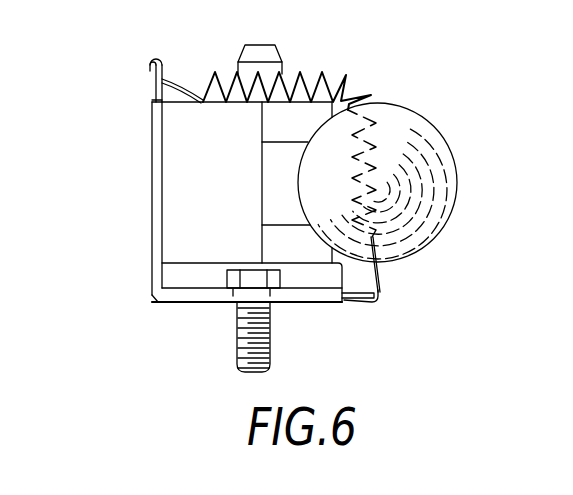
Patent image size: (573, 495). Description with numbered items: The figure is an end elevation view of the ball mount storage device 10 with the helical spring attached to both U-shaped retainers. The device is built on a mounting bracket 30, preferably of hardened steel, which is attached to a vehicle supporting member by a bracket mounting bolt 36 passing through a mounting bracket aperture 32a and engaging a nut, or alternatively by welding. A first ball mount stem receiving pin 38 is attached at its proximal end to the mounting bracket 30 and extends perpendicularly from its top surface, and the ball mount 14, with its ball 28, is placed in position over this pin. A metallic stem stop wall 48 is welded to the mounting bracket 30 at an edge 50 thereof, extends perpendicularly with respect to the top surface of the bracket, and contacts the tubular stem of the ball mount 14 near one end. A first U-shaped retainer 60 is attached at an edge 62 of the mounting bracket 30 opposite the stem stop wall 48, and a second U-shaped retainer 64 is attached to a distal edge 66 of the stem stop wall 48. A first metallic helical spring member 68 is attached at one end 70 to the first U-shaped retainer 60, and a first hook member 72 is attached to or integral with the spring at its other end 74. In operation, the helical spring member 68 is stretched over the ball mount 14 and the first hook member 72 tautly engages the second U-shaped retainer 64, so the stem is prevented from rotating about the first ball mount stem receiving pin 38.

The ball mount storage device 10 is at (138, 274).
The ball mount 14 is at (183, 215).
The ball 28 is at (437, 163).
The mounting bracket 30 is at (183, 303).
The mounting bracket aperture 32a is at (265, 311).
The bracket mounting bolt 36 is at (248, 272).
The first ball mount stem receiving pin 38 is at (258, 45).
The stem stop wall 48 is at (158, 168).
The edge of mounting bracket 50 is at (157, 302).
The first U-shaped retainer 60 is at (361, 298).
The edge of mounting bracket 62 is at (350, 304).
The second U-shaped retainer 64 is at (157, 82).
The distal edge of stem stop wall 66 is at (157, 100).
The first helical spring member 68 is at (350, 81).
The one end of spring 70 is at (383, 282).
The first hook member 72 is at (157, 58).
The other end of spring 74 is at (178, 83).